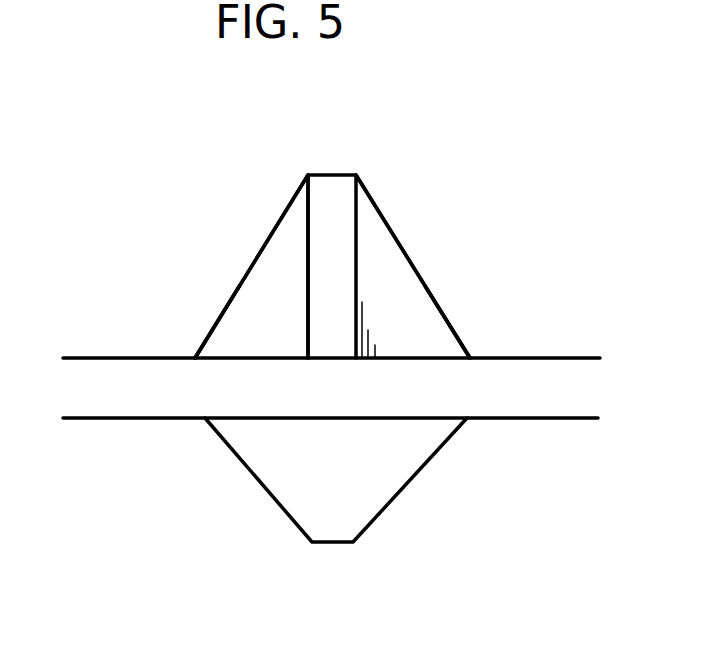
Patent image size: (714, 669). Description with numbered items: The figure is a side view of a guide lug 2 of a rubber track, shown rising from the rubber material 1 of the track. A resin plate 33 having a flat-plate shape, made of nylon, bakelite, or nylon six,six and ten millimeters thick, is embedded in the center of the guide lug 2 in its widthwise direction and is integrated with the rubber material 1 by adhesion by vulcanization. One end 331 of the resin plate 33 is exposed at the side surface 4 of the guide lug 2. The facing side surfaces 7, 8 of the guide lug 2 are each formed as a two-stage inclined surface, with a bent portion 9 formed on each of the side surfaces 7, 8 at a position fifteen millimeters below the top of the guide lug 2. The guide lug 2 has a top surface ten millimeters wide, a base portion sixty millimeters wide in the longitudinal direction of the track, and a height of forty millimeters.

The rubber material 1 is at (567, 377).
The guide lug 2 is at (388, 194).
The resin plate 33 is at (323, 173).
The end of the resin plate 331 is at (323, 253).
The bent portion 9 is at (242, 264).
The facing side surface 7 is at (222, 307).
The side surface 4 is at (412, 282).
The facing side surface 8 is at (455, 326).